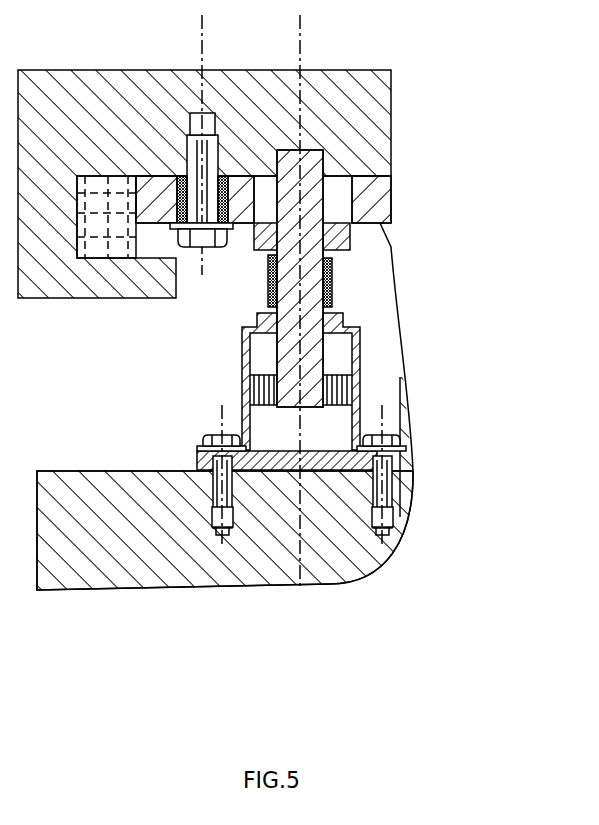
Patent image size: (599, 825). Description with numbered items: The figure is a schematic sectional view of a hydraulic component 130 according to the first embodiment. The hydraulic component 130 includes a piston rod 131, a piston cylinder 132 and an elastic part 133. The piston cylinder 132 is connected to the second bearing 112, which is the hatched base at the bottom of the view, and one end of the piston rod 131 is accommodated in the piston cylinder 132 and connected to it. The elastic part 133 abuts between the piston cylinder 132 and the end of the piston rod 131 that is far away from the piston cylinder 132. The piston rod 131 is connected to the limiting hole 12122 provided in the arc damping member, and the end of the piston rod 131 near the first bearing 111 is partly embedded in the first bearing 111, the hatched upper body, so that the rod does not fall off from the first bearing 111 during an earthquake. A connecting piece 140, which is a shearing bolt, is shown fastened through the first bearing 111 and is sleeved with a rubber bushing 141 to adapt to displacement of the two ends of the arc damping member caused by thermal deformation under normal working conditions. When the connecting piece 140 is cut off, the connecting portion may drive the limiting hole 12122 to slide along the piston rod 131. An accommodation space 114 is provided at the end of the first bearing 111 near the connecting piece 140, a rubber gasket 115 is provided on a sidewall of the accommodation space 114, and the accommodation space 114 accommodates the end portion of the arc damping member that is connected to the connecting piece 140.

The first bearing 111 is at (337, 92).
The second bearing 112 is at (158, 485).
The accommodation space 114 is at (155, 245).
The rubber gasket 115 is at (117, 243).
The connecting piece 140 is at (198, 123).
The rubber bushing 141 is at (177, 175).
The hydraulic component 130 is at (388, 308).
The piston rod 131 is at (330, 240).
The piston cylinder 132 is at (358, 360).
The elastic part 133 is at (330, 282).
The limiting hole 12122 is at (340, 193).